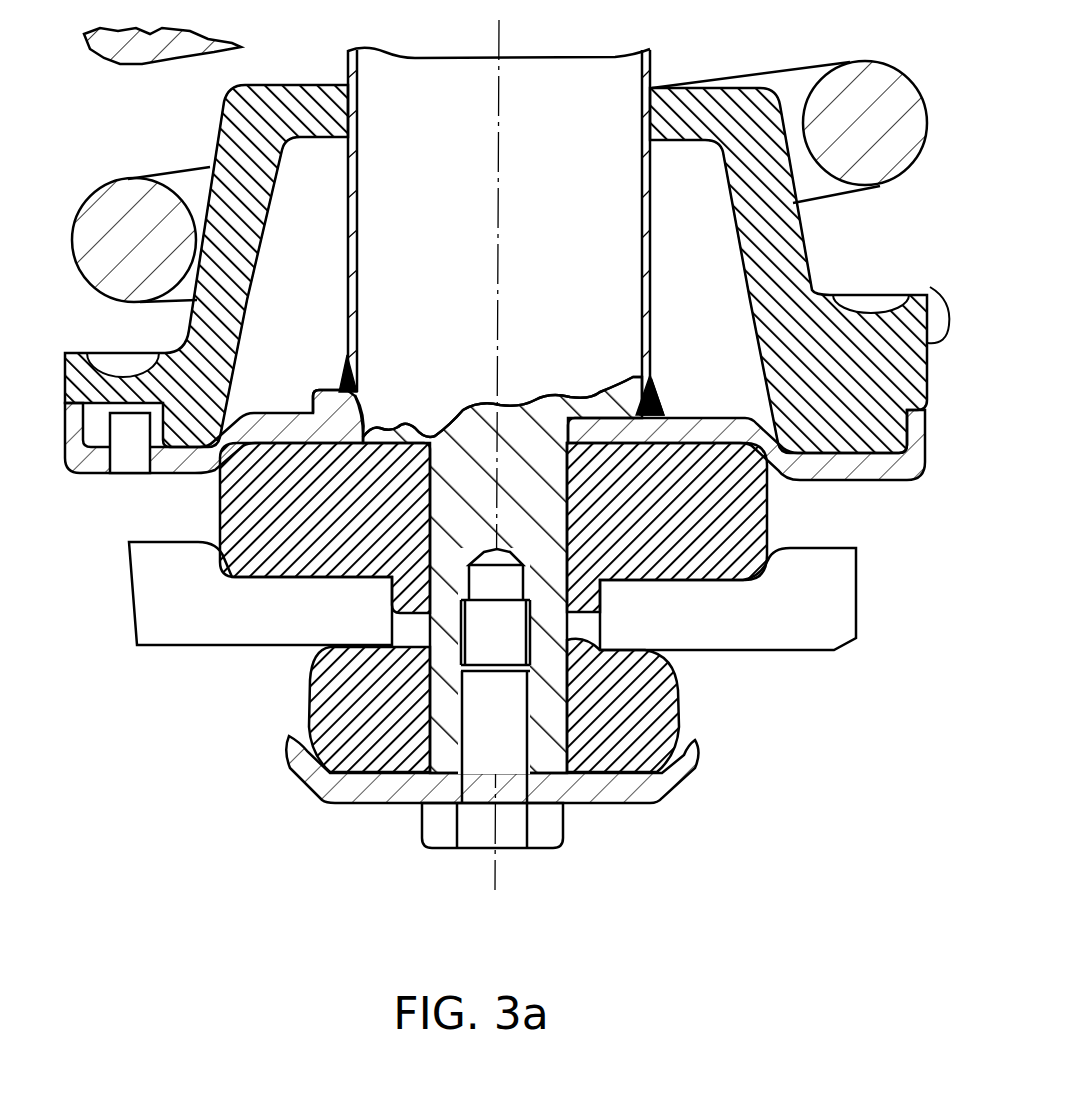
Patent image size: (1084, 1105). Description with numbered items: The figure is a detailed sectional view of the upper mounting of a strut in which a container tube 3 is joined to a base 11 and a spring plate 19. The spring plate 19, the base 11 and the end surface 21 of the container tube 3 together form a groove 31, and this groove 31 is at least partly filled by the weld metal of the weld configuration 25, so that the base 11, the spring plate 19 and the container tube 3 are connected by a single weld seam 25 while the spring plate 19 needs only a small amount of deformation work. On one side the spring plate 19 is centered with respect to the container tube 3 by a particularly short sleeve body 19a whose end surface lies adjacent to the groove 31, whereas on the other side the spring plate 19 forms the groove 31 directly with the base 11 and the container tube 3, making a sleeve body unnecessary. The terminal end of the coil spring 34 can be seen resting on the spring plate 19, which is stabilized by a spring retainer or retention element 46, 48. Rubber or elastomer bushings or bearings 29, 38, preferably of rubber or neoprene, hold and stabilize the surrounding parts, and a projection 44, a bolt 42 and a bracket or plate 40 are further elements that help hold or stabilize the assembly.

The container tube 3 is at (652, 267).
The base 11 is at (469, 492).
The spring plate 19 is at (167, 458).
The sleeve body 19a is at (328, 395).
The end surface 21 is at (347, 364).
The weld configuration 25 is at (661, 411).
The elastomer bushing 29 is at (772, 516).
The groove 31 is at (632, 402).
The coil spring 34 is at (893, 63).
The elastomer bushing 38 is at (679, 707).
The bracket or plate 40 is at (647, 803).
The bolt 42 is at (548, 848).
The projection 44 is at (117, 453).
The spring retainer 46 is at (183, 340).
The spring retainer 48 is at (942, 298).